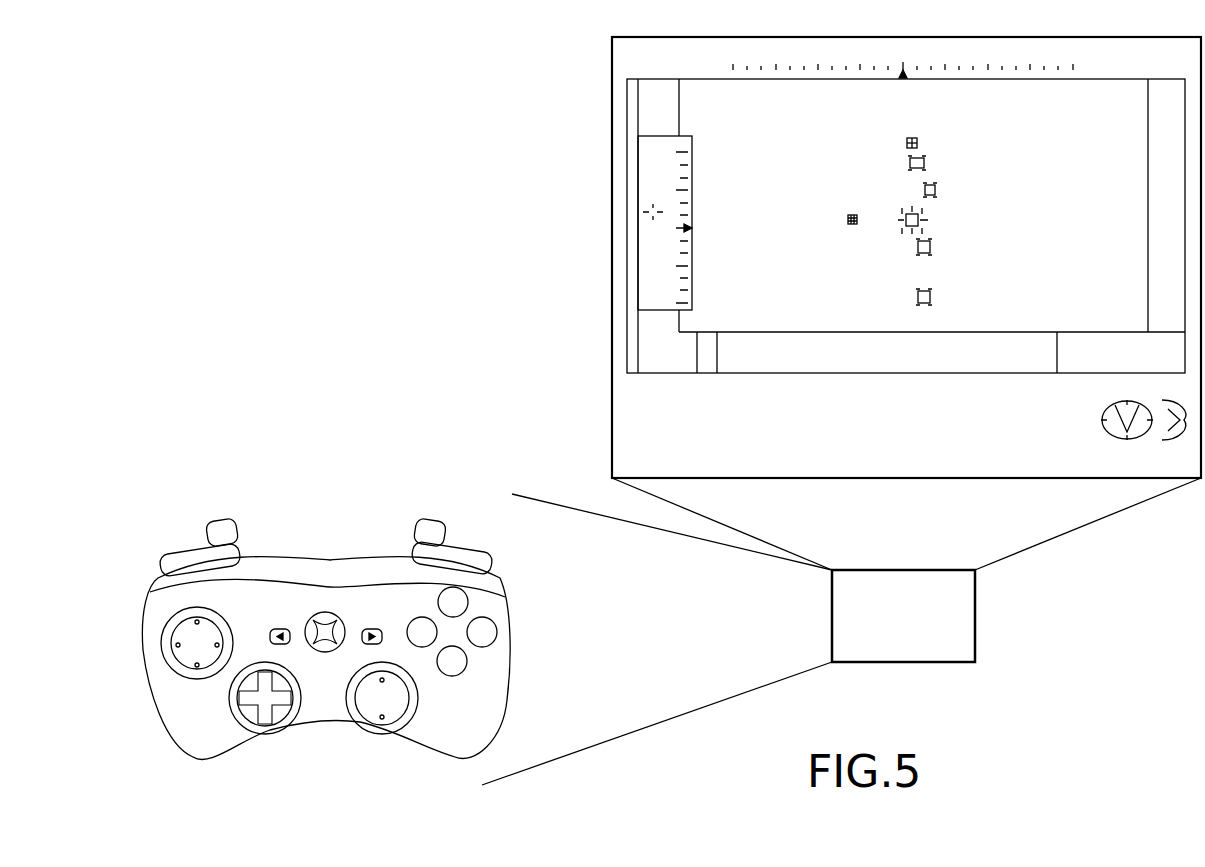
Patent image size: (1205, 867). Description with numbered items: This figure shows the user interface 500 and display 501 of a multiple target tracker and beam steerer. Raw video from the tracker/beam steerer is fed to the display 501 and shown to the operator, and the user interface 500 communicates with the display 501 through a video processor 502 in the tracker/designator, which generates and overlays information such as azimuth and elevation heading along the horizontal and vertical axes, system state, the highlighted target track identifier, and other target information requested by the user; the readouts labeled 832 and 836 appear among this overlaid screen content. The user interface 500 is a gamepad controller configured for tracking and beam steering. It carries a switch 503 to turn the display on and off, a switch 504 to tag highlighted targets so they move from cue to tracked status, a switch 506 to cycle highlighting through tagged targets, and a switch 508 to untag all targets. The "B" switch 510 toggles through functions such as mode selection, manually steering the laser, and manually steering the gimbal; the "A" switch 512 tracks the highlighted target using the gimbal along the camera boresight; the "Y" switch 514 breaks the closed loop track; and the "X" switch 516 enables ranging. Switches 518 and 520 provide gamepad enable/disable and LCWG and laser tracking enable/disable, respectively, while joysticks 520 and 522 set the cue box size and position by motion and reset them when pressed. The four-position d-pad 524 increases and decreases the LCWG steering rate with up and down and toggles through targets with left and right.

The user interface 500 is at (310, 445).
The display 501 is at (807, 257).
The video processor 502 is at (975, 585).
The switch 503 is at (170, 557).
The switch 504 is at (480, 552).
The switch 506 is at (440, 522).
The switch 508 is at (232, 520).
The "B" switch 510 is at (497, 631).
The "A" switch 512 is at (460, 676).
The "Y" switch 514 is at (468, 602).
The "X" switch 516 is at (420, 618).
The switch 518 is at (335, 612).
The joystick 520 is at (197, 680).
The joystick 522 is at (384, 734).
The four-position d-pad 524 is at (272, 734).
The elevation readout 832 is at (712, 243).
The target marker 836 is at (869, 225).